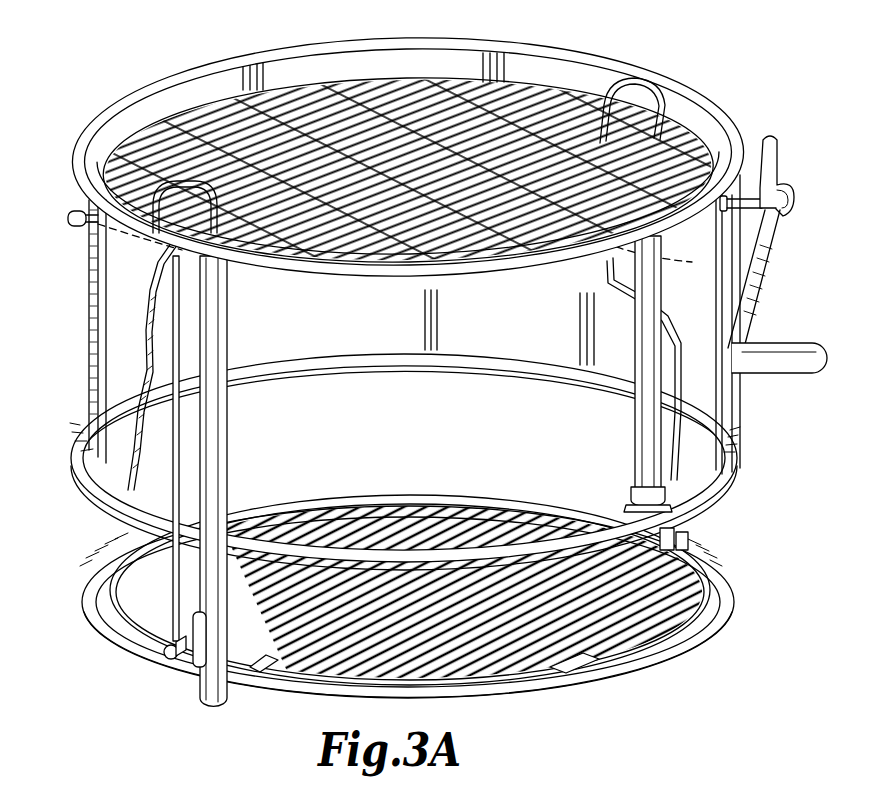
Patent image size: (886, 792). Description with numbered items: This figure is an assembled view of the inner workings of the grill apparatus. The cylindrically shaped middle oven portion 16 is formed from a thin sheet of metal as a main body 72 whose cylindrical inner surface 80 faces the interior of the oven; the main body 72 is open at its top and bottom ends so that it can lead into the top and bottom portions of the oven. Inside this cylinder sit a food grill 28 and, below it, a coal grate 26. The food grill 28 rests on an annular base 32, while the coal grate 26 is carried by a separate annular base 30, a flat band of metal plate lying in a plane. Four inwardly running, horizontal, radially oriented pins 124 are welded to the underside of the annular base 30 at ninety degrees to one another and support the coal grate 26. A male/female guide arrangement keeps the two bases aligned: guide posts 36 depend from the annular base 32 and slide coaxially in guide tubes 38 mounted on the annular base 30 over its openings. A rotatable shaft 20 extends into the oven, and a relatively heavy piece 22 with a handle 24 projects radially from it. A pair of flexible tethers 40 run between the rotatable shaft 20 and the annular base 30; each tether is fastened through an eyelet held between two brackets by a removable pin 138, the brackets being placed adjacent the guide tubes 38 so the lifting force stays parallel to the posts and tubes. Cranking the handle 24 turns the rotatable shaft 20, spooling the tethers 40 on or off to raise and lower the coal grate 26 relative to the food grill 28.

The middle oven portion 16 is at (88, 362).
The rotatable shaft 20 is at (74, 226).
The relatively heavy piece 22 is at (760, 278).
The handle 24 is at (777, 376).
The coal grate 26 is at (643, 620).
The food grill 28 is at (598, 64).
The annular base 30 is at (730, 620).
The annular base 32 is at (675, 137).
The guide posts 36 is at (230, 484).
The guide tubes 38 is at (630, 498).
The flexible tethers 40 is at (128, 498).
The main body 72 is at (90, 316).
The inner surface 80 is at (535, 330).
The pins 124 is at (604, 666).
The pin 138 is at (163, 658).